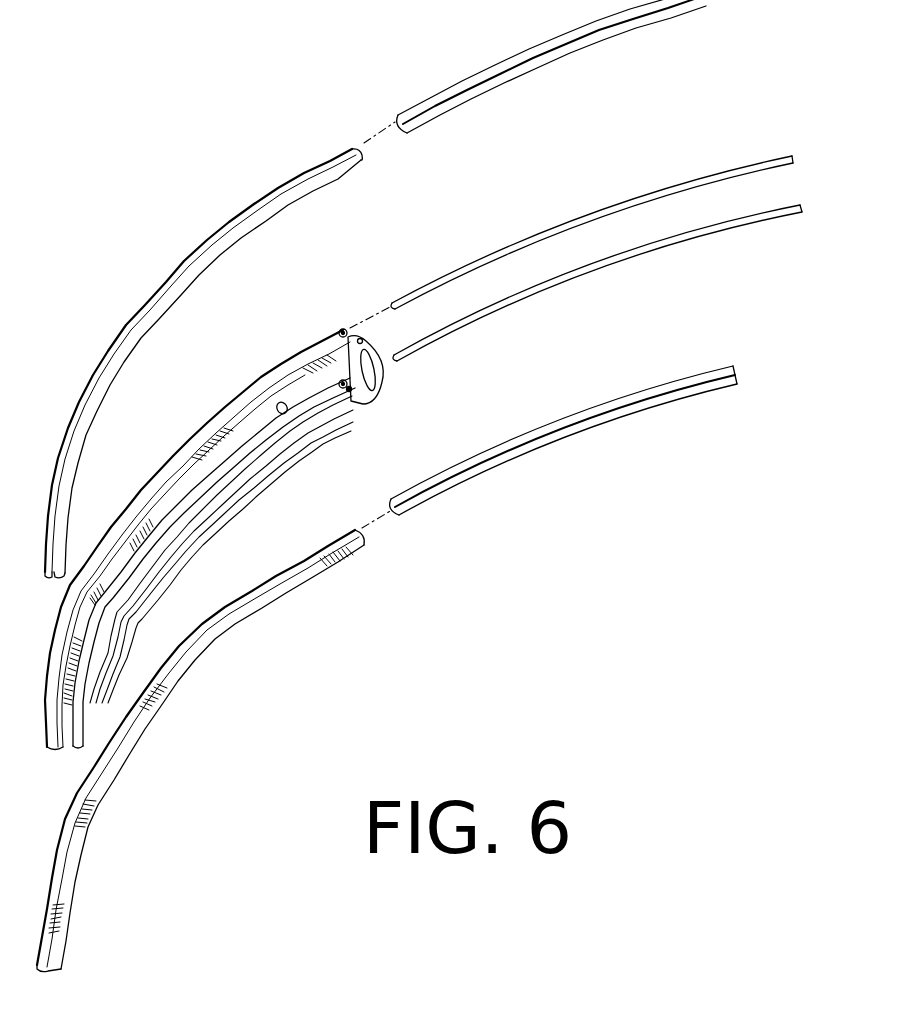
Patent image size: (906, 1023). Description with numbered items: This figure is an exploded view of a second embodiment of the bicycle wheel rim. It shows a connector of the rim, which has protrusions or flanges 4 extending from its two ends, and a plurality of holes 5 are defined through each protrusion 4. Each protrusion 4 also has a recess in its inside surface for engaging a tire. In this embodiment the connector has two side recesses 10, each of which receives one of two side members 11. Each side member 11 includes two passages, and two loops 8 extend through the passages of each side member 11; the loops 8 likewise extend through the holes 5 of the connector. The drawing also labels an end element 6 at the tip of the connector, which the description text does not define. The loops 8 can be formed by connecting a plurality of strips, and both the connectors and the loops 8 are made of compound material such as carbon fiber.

The protrusion 4 is at (285, 435).
The holes 5 is at (344, 332).
The end cap 6 is at (378, 388).
The loops 8 is at (600, 38).
The side recesses 10 is at (349, 390).
The side members 11 is at (285, 186).